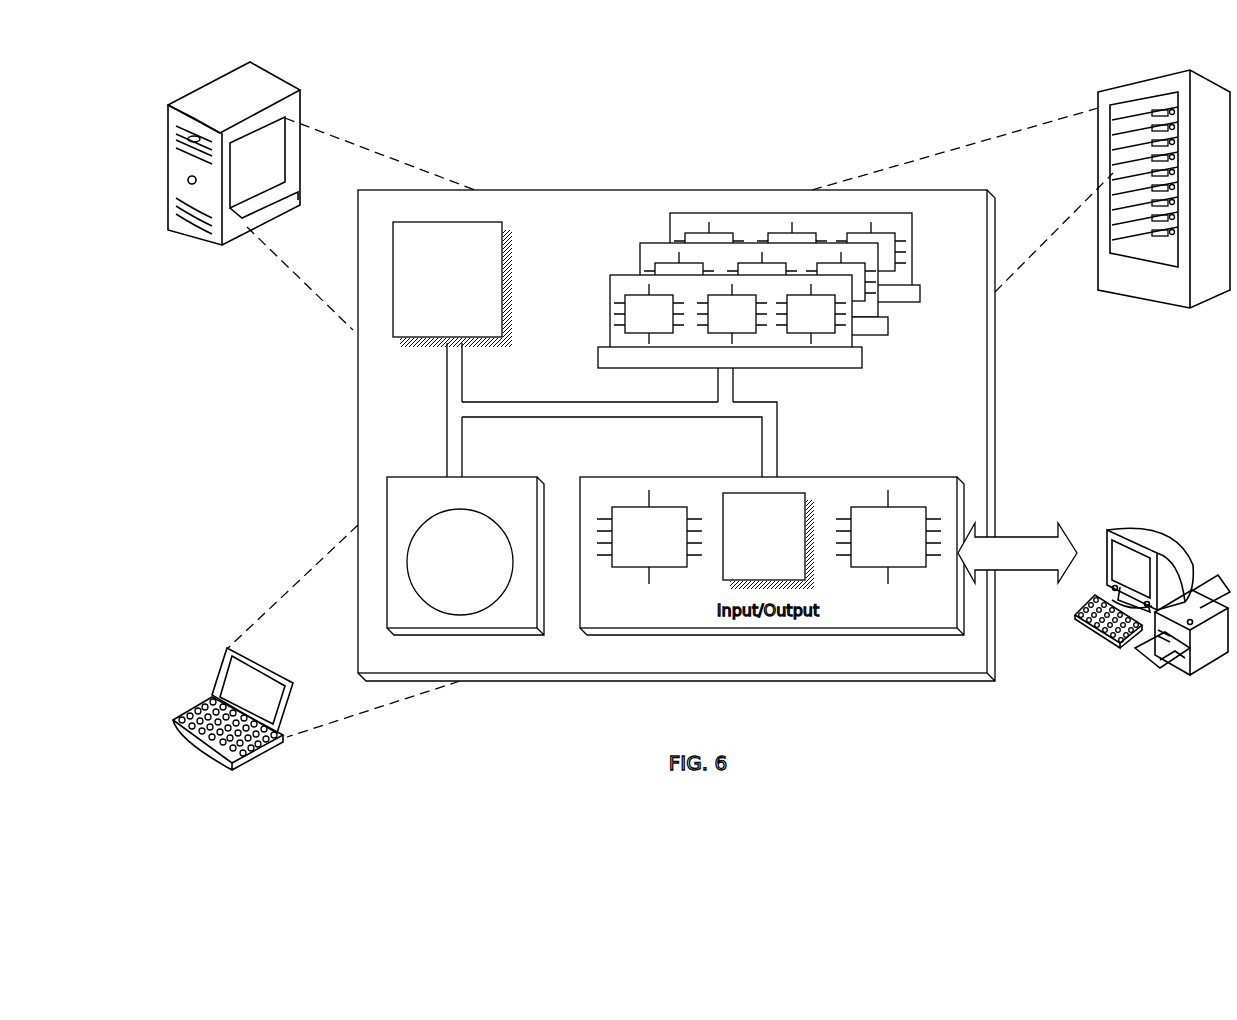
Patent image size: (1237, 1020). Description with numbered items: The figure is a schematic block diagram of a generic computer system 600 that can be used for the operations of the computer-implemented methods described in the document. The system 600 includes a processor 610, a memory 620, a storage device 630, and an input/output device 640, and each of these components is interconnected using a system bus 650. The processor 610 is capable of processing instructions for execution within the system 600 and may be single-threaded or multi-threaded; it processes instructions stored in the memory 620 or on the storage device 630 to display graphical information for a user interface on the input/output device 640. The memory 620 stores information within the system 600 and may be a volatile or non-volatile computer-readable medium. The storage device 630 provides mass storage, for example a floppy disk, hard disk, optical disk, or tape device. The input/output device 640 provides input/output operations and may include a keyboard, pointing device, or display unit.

The computer system 600 is at (524, 82).
The processor 610 is at (452, 284).
The memory 620 is at (915, 336).
The storage device 630 is at (465, 556).
The input/output device 640 is at (1107, 527).
The system bus 650 is at (612, 418).